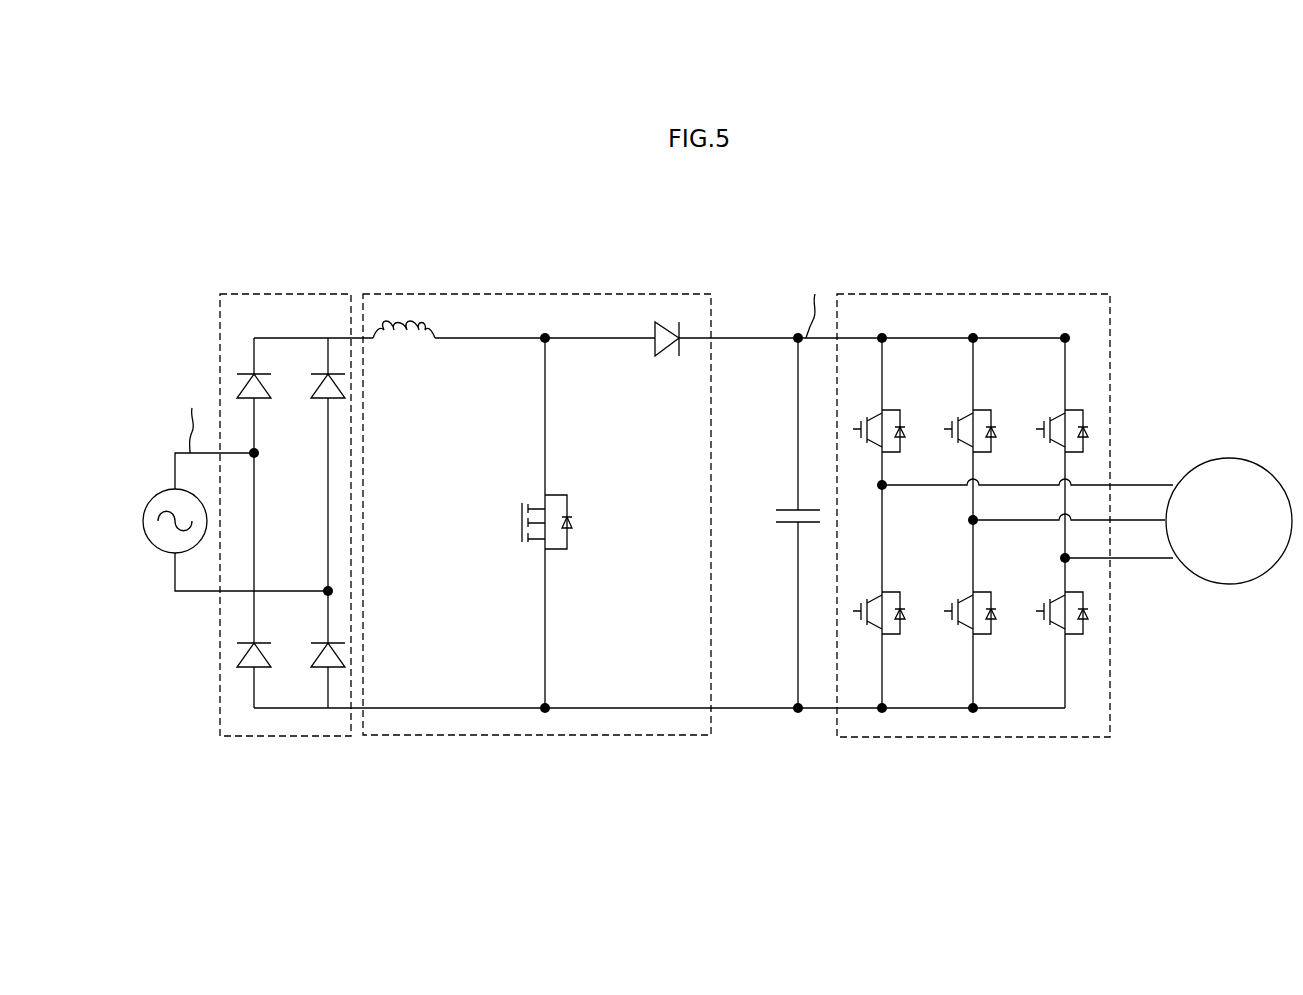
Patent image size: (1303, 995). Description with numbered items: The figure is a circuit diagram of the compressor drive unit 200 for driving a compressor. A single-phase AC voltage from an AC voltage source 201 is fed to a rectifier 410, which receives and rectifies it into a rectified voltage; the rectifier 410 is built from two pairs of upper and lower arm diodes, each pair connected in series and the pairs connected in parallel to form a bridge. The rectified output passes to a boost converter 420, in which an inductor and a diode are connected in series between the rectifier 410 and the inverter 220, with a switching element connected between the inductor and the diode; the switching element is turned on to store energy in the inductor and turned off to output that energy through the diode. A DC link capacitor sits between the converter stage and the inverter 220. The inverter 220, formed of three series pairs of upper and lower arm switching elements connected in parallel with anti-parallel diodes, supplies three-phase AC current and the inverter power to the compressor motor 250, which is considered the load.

The compressor drive unit 200 is at (178, 233).
The AC voltage source 201 is at (160, 553).
The rectifier 410 is at (320, 294).
The boost converter 420 is at (672, 294).
The inverter 220 is at (1072, 294).
The compressor motor 250 is at (1229, 458).